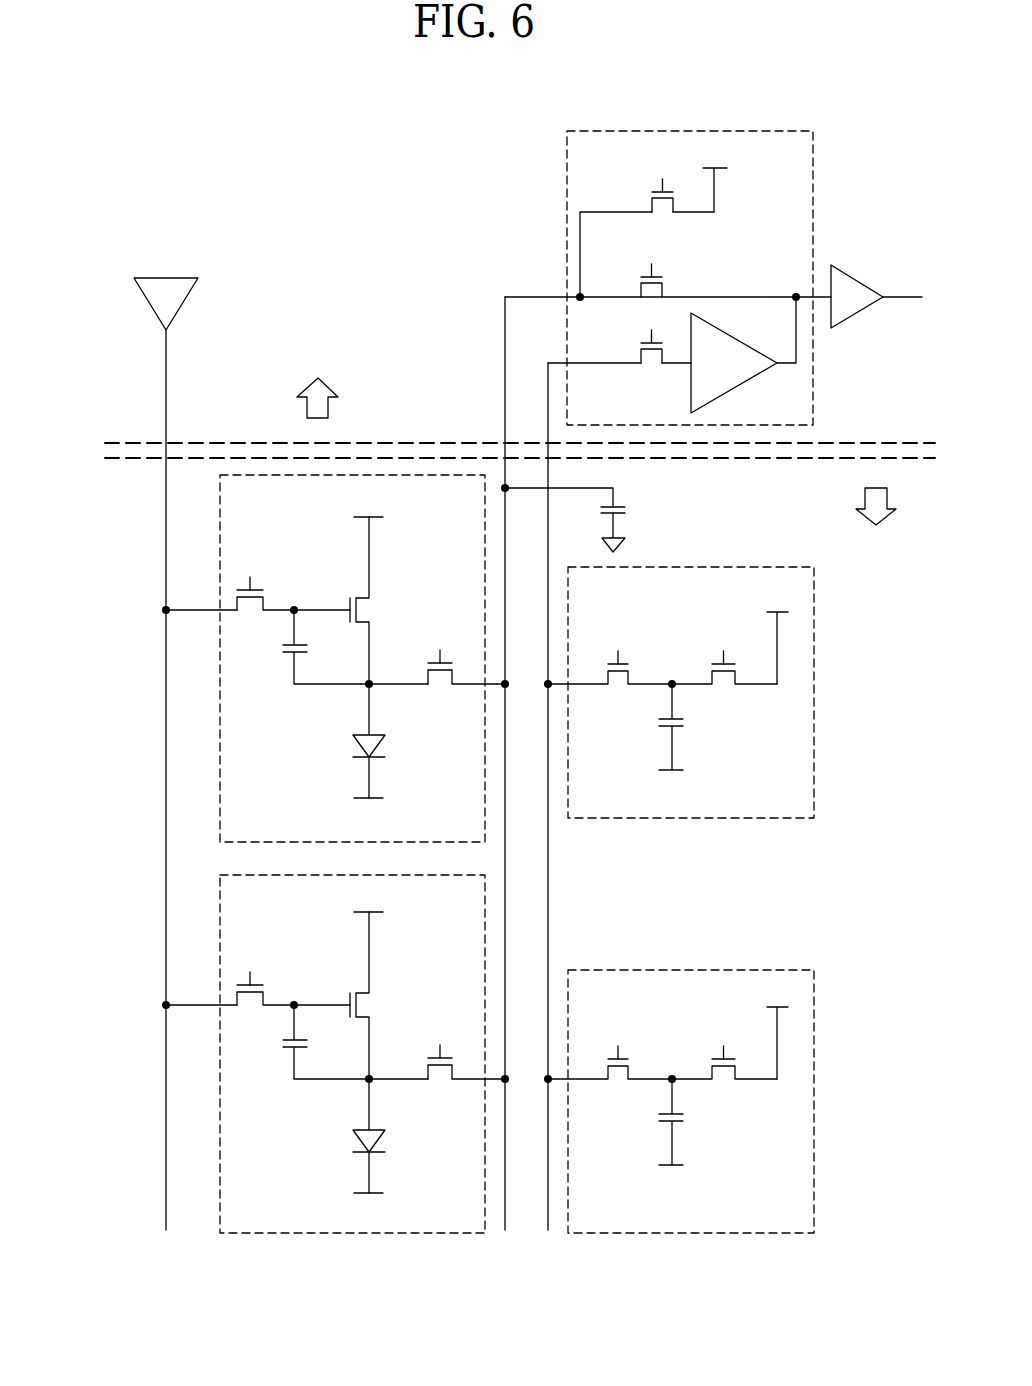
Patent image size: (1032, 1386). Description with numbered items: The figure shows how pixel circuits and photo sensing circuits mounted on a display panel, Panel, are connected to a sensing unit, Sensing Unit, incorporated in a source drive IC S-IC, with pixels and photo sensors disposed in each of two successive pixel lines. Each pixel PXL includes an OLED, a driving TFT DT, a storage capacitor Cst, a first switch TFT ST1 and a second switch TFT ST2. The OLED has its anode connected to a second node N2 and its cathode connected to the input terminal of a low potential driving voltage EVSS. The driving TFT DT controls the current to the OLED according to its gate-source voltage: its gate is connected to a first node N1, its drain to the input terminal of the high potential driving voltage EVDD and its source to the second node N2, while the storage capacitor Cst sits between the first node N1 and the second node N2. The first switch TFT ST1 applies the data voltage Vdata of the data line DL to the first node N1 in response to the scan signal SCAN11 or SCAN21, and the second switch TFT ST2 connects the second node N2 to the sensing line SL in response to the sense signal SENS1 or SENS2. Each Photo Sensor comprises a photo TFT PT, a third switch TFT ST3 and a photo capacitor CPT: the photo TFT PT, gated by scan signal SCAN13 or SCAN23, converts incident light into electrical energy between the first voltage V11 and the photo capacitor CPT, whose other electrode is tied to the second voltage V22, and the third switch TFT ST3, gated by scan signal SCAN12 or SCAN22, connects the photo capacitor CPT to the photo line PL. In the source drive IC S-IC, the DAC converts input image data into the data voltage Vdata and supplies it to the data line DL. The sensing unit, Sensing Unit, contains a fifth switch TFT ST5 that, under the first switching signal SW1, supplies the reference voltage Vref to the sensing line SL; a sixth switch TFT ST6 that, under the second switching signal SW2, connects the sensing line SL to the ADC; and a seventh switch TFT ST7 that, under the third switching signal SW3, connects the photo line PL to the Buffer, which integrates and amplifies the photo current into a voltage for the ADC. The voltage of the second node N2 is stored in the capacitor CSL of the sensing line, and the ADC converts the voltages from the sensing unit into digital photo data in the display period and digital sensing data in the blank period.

The source drive IC S-IC is at (318, 382).
The display panel Panel is at (876, 520).
The sensing unit Sensing Unit is at (567, 173).
The fifth switch TFT ST5 is at (647, 242).
The sixth switch TFT ST6 is at (668, 283).
The seventh switch TFT ST7 is at (619, 350).
The first switching signal SW1 is at (649, 186).
The second switching signal SW2 is at (640, 266).
The third switching signal SW3 is at (640, 338).
The reference voltage Vref is at (714, 176).
The buffer Buffer is at (743, 355).
The element ADC is at (857, 296).
The element DAC is at (166, 304).
The data voltage for displaying Vdata is at (201, 358).
The data line DL is at (166, 540).
The sensing line SL is at (505, 897).
The photo line PL is at (548, 853).
The capacitor of the sensing line CSL is at (581, 518).
The pixel PXL is at (220, 820).
The first switch TFT ST1 is at (263, 811).
The scan signal SCAN11 is at (255, 570).
The scan signal SCAN21 is at (255, 965).
The first node N1 is at (320, 793).
The driving TFT DT is at (371, 798).
The high potential driving voltage EVDD is at (371, 699).
The storage capacitor Cst is at (310, 844).
The second node N2 is at (383, 869).
The second switch TFT ST2 is at (467, 885).
The sense signal SENS1 is at (444, 644).
The sense signal SENS2 is at (444, 1039).
The element OLED is at (393, 938).
The low potential driving voltage EVSS is at (372, 1010).
The photo sensor Photo Sensor is at (812, 788).
The third switch TFT ST3 is at (608, 886).
The scan signal SCAN12 is at (619, 644).
The scan signal SCAN22 is at (619, 1039).
The photo TFT PT is at (722, 886).
The scan signal SCAN13 is at (723, 644).
The scan signal SCAN23 is at (723, 1039).
The first voltage V11 is at (776, 832).
The photo capacitor CPT is at (685, 924).
The second voltage V22 is at (672, 982).